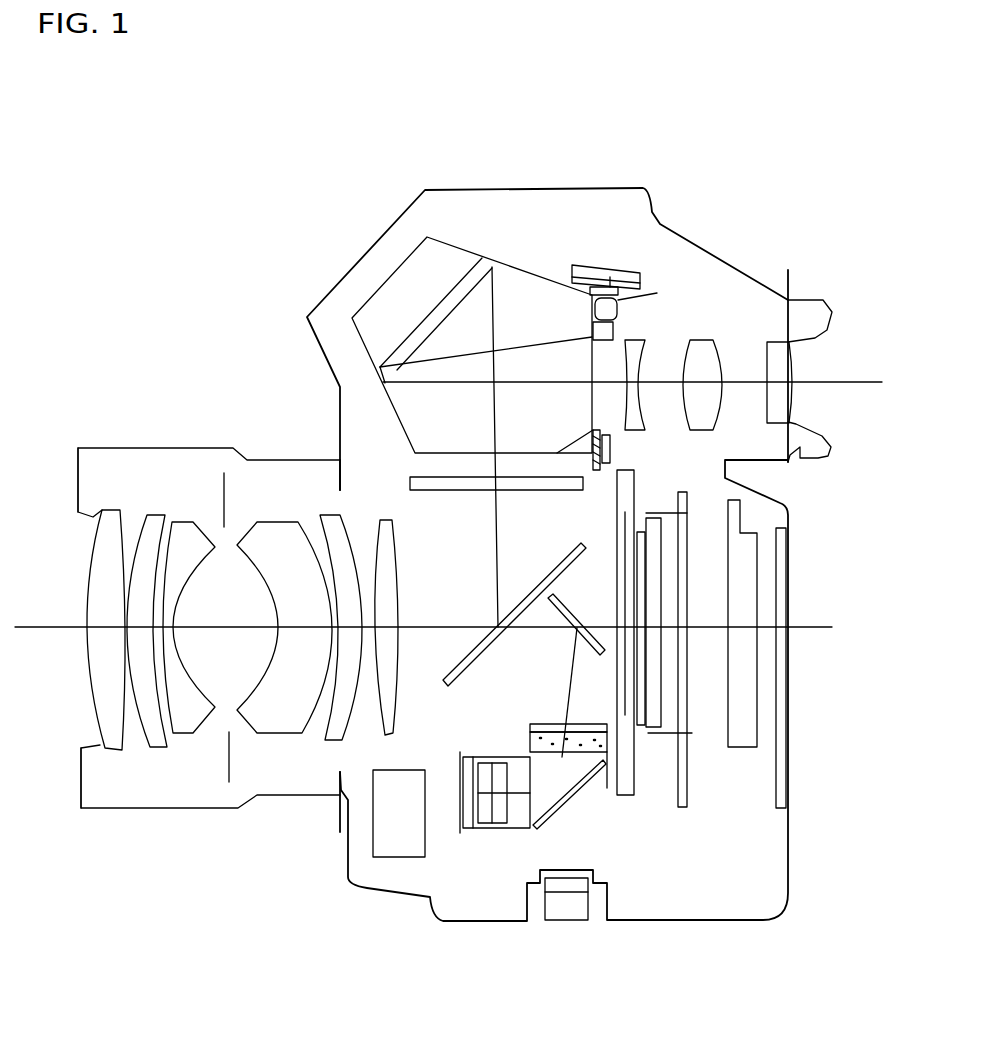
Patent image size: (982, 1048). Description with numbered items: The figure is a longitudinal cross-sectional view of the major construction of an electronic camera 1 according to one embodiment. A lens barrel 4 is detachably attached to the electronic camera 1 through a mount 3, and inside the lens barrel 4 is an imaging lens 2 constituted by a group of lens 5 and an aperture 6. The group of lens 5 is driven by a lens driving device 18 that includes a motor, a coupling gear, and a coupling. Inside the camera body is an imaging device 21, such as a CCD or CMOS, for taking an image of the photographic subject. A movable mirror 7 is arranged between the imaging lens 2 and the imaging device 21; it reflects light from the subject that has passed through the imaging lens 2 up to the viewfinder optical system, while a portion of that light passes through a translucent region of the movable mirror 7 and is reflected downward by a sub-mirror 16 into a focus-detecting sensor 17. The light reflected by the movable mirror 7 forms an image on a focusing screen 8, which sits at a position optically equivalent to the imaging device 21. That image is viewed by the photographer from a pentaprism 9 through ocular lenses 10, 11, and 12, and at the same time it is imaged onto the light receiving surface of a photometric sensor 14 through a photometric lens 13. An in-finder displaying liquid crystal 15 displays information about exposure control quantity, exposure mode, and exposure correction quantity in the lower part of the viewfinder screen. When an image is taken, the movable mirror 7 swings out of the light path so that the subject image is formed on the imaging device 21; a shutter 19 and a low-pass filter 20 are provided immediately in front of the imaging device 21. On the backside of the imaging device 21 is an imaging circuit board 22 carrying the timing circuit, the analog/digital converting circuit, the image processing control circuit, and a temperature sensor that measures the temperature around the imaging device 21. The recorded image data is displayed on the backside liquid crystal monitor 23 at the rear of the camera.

The electronic camera 1 is at (368, 887).
The imaging lens 2 is at (177, 810).
The mount 3 is at (345, 783).
The lens barrel 4 is at (80, 777).
The group of lens 5 is at (147, 743).
The aperture 6 is at (230, 757).
The movable mirror 7 is at (445, 687).
The focusing screen 8 is at (455, 492).
The pentaprism 9 is at (462, 248).
The ocular lens 10 is at (692, 338).
The ocular lens 11 is at (712, 313).
The ocular lens 12 is at (793, 270).
The photometric lens 13 is at (643, 340).
The photometric sensor 14 is at (607, 268).
The in-finder displaying liquid crystal 15 is at (597, 472).
The sub-mirror 16 is at (595, 653).
The focus-detecting sensor 17 is at (498, 830).
The lens driving device 18 is at (425, 837).
The shutter 19 is at (623, 797).
The low-pass filter 20 is at (642, 725).
The imaging device 21 is at (660, 733).
The imaging circuit board 22 is at (686, 735).
The backside liquid crystal monitor 23 is at (747, 747).